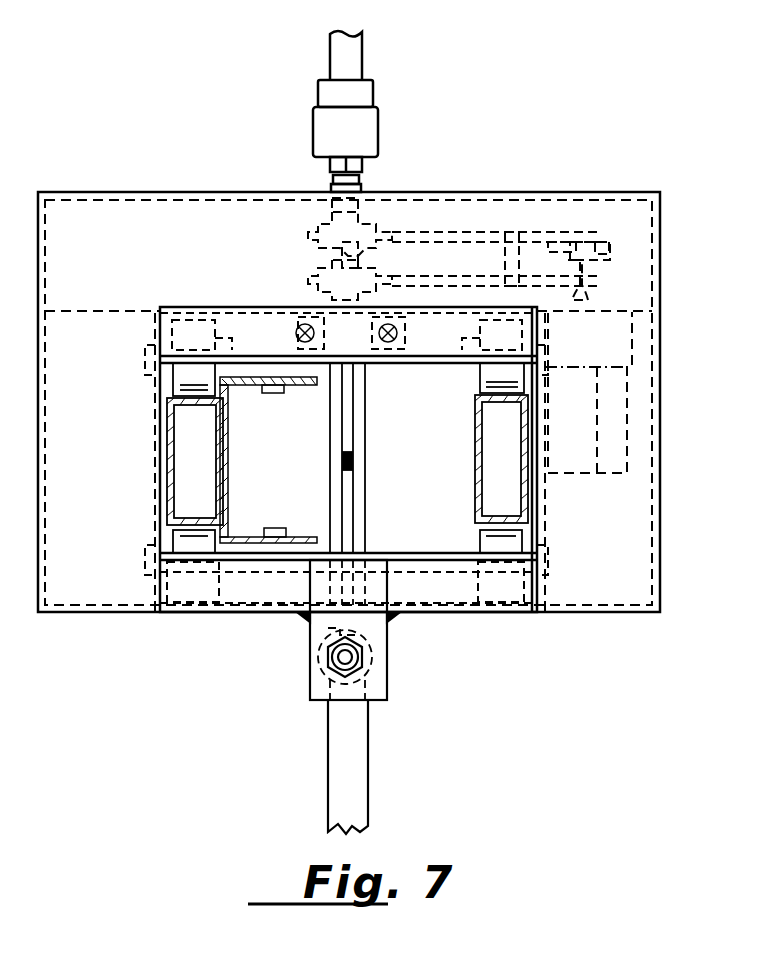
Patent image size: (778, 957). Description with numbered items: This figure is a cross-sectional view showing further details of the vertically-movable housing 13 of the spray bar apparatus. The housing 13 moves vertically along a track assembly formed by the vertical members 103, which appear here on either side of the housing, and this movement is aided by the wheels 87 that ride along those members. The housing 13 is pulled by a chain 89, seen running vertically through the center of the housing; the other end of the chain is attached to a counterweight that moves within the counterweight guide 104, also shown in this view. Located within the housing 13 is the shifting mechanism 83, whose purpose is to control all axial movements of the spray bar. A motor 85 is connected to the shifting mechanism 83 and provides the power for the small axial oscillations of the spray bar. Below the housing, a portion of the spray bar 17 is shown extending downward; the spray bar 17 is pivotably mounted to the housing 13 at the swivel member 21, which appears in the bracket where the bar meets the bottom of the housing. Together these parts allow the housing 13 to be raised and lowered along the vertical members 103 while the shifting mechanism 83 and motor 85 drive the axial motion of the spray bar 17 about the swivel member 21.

The vertically-movable housing 13 is at (660, 248).
The spray bar 17 is at (350, 782).
The swivel member 21 is at (322, 672).
The shifting mechanism 83 is at (452, 236).
The motor 85 is at (605, 414).
The wheels 87 is at (190, 372).
The chain 89 is at (350, 446).
The vertical members 103 is at (168, 470).
The counterweight guide 104 is at (308, 386).